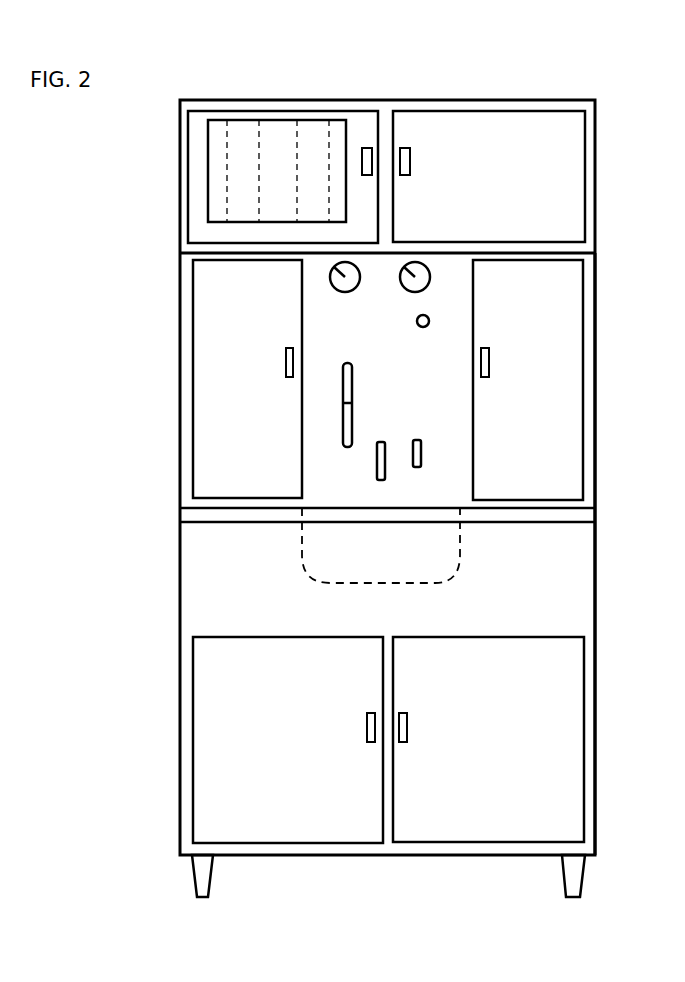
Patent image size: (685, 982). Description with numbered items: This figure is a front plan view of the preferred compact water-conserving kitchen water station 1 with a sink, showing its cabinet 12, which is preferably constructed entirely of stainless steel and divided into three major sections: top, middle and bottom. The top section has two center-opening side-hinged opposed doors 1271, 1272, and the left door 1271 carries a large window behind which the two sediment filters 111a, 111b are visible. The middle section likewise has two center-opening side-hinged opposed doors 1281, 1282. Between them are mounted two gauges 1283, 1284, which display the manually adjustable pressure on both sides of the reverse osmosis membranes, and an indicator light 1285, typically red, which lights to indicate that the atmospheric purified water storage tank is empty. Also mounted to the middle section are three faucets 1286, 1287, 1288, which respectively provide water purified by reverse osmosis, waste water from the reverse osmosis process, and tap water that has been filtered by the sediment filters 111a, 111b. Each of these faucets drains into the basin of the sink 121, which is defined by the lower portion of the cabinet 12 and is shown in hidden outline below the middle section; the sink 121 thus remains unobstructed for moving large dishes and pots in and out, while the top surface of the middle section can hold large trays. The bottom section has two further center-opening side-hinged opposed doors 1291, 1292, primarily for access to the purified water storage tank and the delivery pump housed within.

The water station 1 is at (601, 95).
The cabinet 12 is at (601, 334).
The sediment filter 111a is at (240, 136).
The sediment filter 111b is at (313, 130).
The sink 121 is at (326, 587).
The left door 1271 is at (306, 190).
The door 1272 is at (518, 190).
The door 1281 is at (263, 393).
The door 1282 is at (562, 386).
The gauge 1283 is at (336, 291).
The gauge 1284 is at (425, 289).
The indicator light 1285 is at (420, 327).
The faucet 1286 is at (353, 403).
The faucet 1287 is at (376, 461).
The faucet 1288 is at (422, 457).
The door 1291 is at (312, 745).
The door 1292 is at (522, 743).